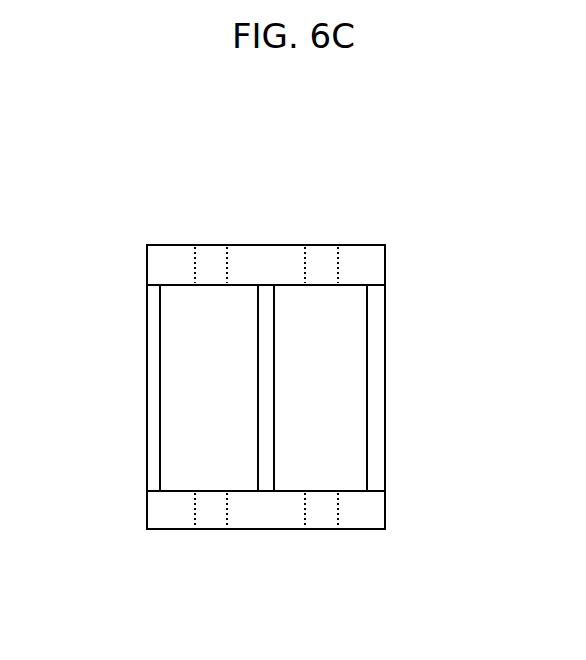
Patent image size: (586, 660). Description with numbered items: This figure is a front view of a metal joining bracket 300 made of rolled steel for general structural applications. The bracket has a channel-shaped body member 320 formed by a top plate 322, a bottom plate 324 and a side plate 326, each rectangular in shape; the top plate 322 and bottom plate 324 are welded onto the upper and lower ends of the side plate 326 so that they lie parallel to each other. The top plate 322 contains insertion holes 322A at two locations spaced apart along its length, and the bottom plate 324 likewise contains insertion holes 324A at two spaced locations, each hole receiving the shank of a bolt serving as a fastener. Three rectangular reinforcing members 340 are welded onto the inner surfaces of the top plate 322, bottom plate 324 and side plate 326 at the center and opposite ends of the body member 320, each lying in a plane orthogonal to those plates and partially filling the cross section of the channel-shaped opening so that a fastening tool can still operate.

The metal joining bracket 300 is at (406, 239).
The body member 320 is at (261, 236).
The top plate 322 is at (362, 253).
The insertion holes 322A is at (199, 262).
The bottom plate 324 is at (360, 520).
The insertion holes 324A is at (202, 512).
The side plate 326 is at (340, 462).
The reinforcing members 340 is at (158, 354).